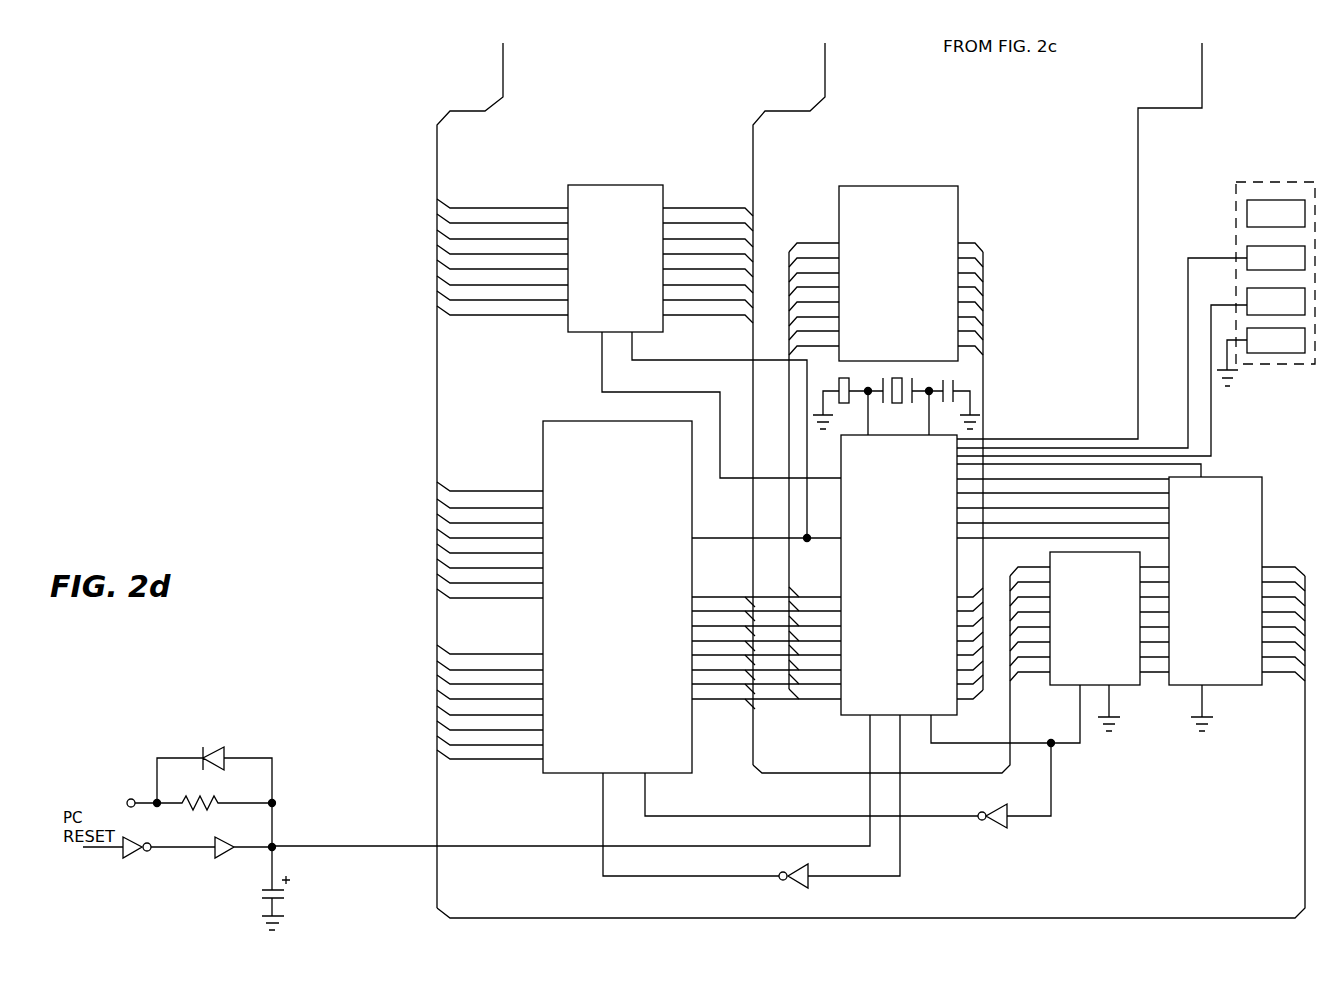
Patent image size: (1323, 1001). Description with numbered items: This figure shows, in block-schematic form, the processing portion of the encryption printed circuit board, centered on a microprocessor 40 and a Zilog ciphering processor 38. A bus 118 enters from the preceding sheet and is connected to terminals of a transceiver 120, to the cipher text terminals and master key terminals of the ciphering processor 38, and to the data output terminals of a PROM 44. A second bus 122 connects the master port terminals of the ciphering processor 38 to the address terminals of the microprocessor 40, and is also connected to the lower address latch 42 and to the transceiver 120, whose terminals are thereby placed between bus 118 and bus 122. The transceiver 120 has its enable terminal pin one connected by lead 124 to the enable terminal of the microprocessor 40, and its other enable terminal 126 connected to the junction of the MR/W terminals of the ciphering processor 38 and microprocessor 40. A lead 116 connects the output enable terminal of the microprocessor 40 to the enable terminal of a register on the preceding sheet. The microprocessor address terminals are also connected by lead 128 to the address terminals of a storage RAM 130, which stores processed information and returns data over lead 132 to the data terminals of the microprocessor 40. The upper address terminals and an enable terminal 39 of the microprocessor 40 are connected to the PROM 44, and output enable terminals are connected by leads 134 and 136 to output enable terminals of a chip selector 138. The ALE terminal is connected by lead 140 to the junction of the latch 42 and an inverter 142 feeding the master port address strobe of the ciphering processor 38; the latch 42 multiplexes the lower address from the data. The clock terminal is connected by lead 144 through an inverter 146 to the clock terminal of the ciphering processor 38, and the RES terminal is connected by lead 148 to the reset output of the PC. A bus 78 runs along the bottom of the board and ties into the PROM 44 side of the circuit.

The ciphering processor 38 is at (576, 774).
The enable terminal 39 is at (1203, 464).
The microprocessor 40 is at (851, 717).
The lower address latch 42 is at (1068, 686).
The PROM 44 is at (1238, 686).
The bus 78 is at (760, 918).
The lead 116 is at (1202, 76).
The bus 118 is at (503, 72).
The transceiver 120 is at (590, 185).
The bus 122 is at (825, 72).
The lead 124 is at (602, 365).
The enable terminal 126 is at (671, 361).
The lead 128 is at (790, 571).
The storage RAM 130 is at (889, 186).
The lead 132 is at (985, 372).
The lead 134 is at (1188, 418).
The lead 136 is at (1211, 418).
The chip selector 138 is at (1315, 182).
The lead 140 is at (945, 743).
The inverter 142 is at (983, 822).
The lead 144 is at (900, 773).
The inverter 146 is at (797, 889).
The lead 148 is at (495, 846).